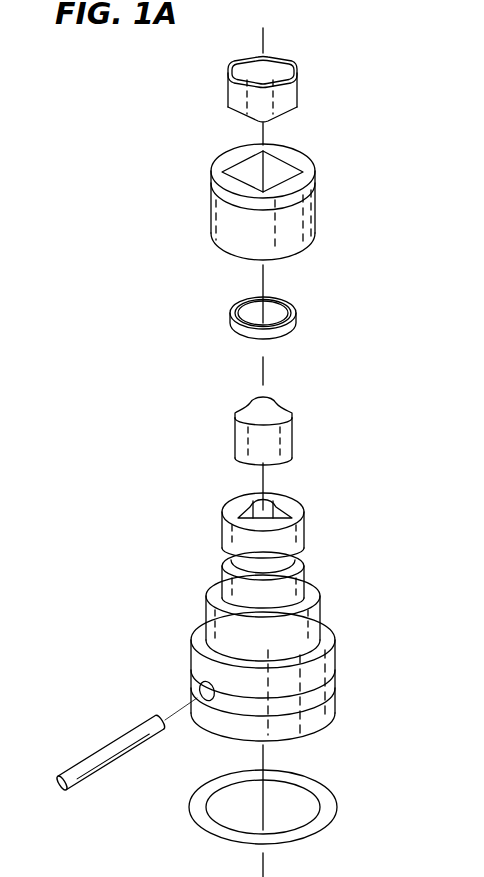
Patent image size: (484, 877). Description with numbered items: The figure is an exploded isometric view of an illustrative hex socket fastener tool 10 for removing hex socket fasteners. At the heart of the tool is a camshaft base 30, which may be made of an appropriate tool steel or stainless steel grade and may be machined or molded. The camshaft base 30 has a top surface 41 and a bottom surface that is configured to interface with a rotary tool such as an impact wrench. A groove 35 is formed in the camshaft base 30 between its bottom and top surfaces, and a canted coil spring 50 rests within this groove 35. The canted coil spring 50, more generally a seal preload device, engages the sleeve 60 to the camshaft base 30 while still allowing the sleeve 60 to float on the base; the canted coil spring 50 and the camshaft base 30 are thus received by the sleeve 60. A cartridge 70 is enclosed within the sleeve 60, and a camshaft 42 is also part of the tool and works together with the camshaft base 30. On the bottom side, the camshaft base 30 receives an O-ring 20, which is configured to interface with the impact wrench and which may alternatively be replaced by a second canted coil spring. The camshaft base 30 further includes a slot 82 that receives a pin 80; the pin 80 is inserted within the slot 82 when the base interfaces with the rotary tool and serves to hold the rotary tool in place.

The hex socket fastener tool 10 is at (211, 86).
The cartridge 70 is at (300, 98).
The sleeve 60 is at (318, 220).
The canted coil spring 50 is at (298, 320).
The camshaft 42 is at (294, 447).
The top surface 41 is at (306, 525).
The groove 35 is at (305, 567).
The camshaft base 30 is at (338, 652).
The slot 82 is at (197, 688).
The pin 80 is at (123, 721).
The O-ring 20 is at (339, 803).